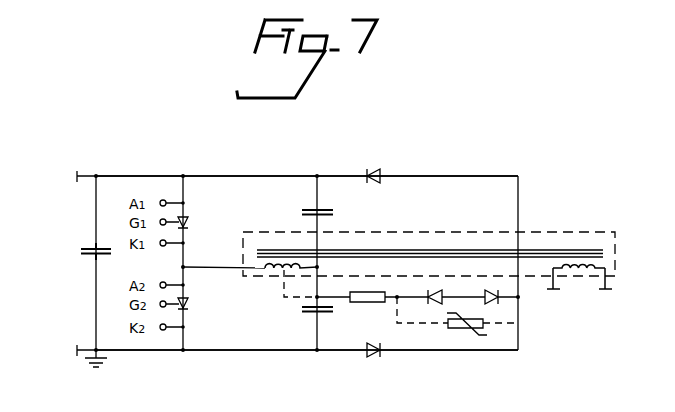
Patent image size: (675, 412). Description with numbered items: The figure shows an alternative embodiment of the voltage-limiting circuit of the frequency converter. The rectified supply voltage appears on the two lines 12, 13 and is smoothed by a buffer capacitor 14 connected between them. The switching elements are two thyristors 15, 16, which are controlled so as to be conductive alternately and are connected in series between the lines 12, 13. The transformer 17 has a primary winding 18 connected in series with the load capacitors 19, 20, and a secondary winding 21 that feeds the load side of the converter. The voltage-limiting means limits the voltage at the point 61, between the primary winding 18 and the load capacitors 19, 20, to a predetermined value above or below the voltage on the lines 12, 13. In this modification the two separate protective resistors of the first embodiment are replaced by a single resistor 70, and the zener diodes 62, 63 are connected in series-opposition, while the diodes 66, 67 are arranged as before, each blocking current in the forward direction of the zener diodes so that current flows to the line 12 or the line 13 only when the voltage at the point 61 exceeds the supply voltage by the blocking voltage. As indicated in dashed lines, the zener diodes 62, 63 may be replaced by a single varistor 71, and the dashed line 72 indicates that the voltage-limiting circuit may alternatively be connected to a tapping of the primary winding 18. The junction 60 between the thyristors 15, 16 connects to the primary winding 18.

The line 12 is at (228, 176).
The line 13 is at (227, 350).
The buffer capacitor 14 is at (82, 254).
The thyristor 15 is at (189, 222).
The thyristor 16 is at (189, 303).
The transformer 17 is at (533, 229).
The primary winding 18 is at (268, 272).
The load capacitor 19 is at (305, 209).
The load capacitor 20 is at (312, 313).
The secondary winding 21 is at (578, 270).
The thyristor junction connection 60 is at (184, 265).
The point 61 is at (320, 264).
The zener diode 62 is at (436, 301).
The zener diode 63 is at (490, 303).
The diode 66 is at (378, 168).
The diode 67 is at (372, 357).
The resistor 70 is at (376, 302).
The varistor 71 is at (460, 332).
The dashed line 72 is at (283, 300).